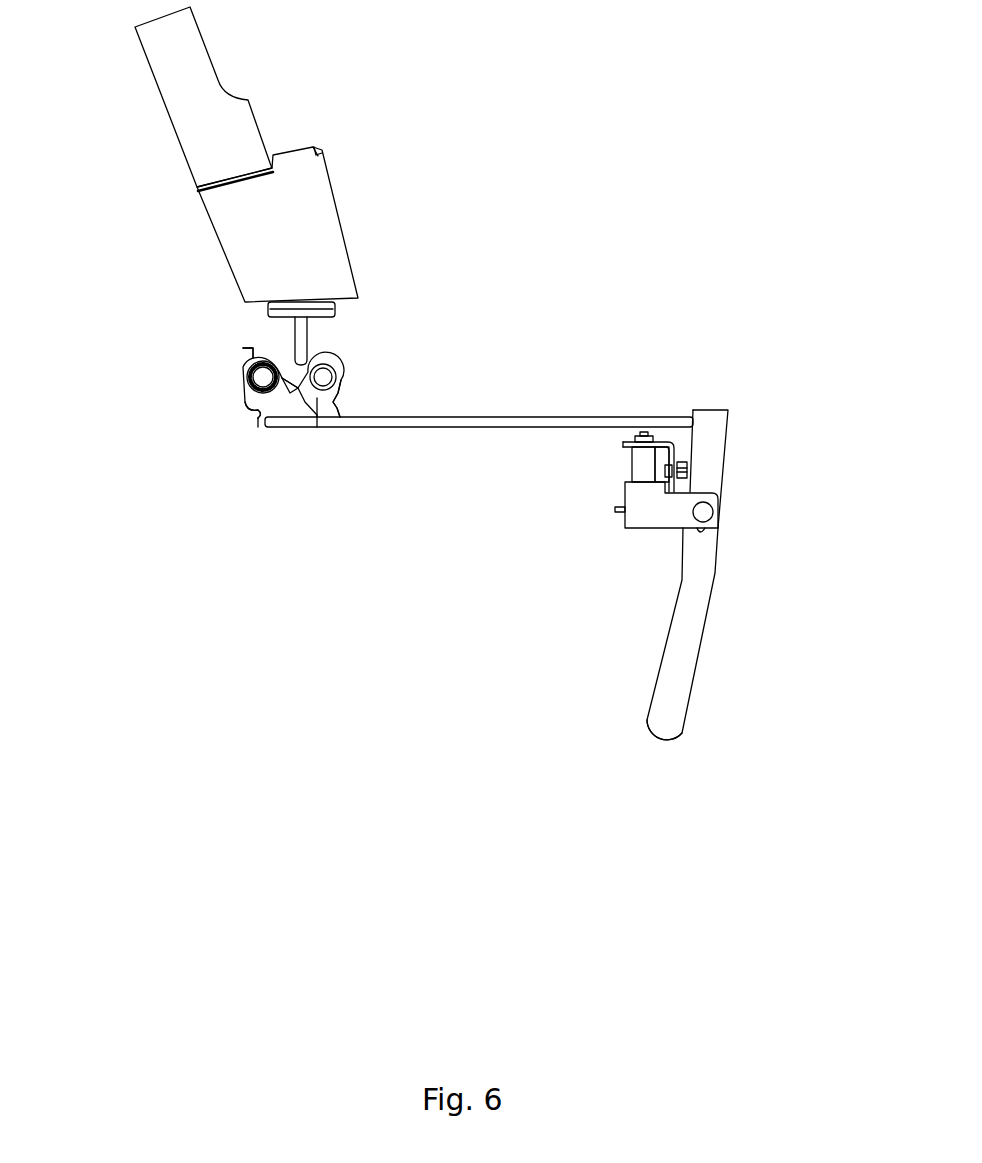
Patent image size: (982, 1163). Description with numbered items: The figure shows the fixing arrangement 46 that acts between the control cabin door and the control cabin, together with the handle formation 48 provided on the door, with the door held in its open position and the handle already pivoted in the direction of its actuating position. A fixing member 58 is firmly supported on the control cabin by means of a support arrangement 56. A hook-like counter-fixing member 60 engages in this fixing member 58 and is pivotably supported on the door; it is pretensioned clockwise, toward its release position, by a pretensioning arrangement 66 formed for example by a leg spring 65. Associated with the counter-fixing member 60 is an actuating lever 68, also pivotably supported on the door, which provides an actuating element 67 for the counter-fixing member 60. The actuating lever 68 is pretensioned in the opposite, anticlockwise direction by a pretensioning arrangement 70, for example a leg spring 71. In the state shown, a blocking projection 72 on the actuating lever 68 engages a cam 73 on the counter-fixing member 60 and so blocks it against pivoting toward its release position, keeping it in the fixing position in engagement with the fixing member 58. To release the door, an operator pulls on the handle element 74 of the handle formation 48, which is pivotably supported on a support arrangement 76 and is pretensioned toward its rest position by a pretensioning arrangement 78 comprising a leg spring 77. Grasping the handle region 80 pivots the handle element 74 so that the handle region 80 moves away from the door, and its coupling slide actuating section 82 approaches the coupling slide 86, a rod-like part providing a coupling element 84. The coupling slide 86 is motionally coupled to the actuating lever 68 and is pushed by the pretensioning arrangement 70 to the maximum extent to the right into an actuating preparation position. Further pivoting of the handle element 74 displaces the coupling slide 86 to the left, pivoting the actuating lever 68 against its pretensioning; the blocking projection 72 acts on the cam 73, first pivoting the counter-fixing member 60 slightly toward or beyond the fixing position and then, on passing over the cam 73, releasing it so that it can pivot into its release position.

The fixing arrangement 46 is at (318, 186).
The handle formation 48 is at (568, 570).
The support arrangement 56 is at (258, 130).
The fixing member 58 is at (290, 338).
The counter-fixing member 60 is at (302, 404).
The leg spring 65 is at (343, 390).
The pretensioning arrangement 66 is at (352, 365).
The actuating element 67 is at (232, 408).
The actuating lever 68 is at (258, 427).
The pretensioning arrangement 70 is at (232, 380).
The leg spring 71 is at (247, 360).
The blocking projection 72 is at (292, 393).
The cam 73 is at (315, 427).
The handle element 74 is at (682, 689).
The support arrangement 76 is at (623, 527).
The leg spring 77 is at (710, 533).
The pretensioning arrangement 78 is at (706, 524).
The handle region 80 is at (640, 785).
The coupling slide actuating section 82 is at (730, 430).
The coupling element 84 is at (479, 415).
The coupling slide 86 is at (458, 428).